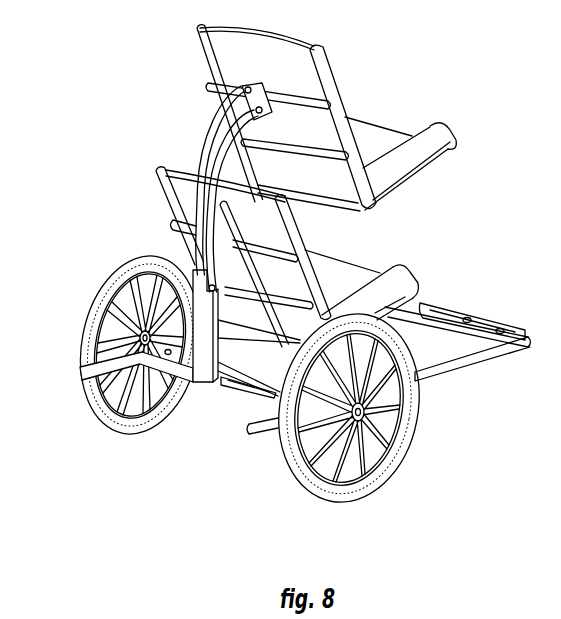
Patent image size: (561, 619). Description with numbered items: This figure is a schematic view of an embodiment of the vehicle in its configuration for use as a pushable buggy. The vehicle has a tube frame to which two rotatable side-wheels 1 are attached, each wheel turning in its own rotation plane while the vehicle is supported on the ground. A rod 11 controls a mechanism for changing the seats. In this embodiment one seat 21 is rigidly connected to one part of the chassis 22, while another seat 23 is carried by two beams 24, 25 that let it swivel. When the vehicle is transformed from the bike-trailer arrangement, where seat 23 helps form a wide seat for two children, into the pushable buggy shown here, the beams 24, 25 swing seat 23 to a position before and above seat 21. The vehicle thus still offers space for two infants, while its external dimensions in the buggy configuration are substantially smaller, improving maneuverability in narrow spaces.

The side-wheels 1 is at (102, 418).
The rod 11 is at (266, 352).
The seat 21 is at (190, 197).
The part of the chassis 22 is at (212, 355).
The seat 23 is at (382, 137).
The beam 24 is at (230, 158).
The beam 25 is at (207, 157).